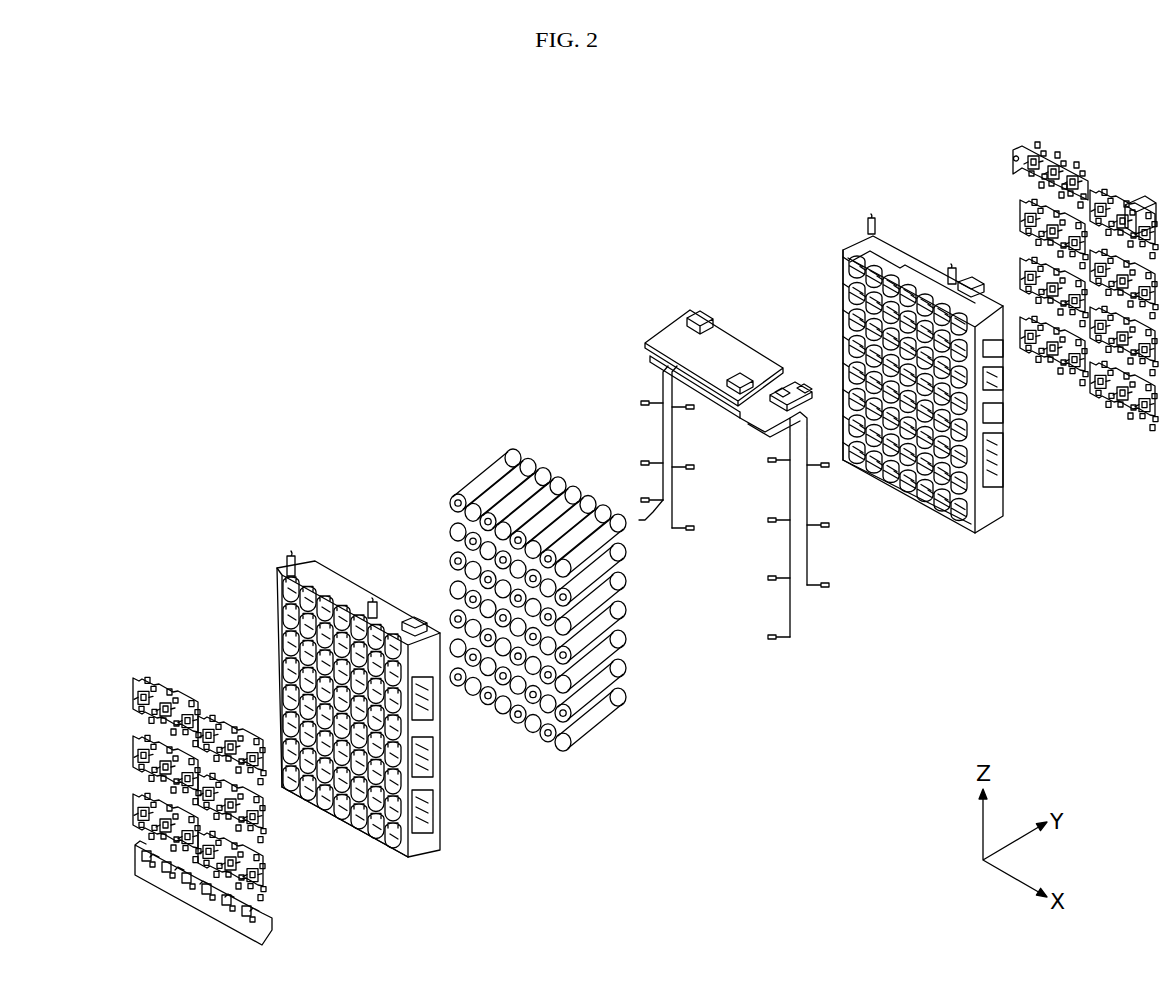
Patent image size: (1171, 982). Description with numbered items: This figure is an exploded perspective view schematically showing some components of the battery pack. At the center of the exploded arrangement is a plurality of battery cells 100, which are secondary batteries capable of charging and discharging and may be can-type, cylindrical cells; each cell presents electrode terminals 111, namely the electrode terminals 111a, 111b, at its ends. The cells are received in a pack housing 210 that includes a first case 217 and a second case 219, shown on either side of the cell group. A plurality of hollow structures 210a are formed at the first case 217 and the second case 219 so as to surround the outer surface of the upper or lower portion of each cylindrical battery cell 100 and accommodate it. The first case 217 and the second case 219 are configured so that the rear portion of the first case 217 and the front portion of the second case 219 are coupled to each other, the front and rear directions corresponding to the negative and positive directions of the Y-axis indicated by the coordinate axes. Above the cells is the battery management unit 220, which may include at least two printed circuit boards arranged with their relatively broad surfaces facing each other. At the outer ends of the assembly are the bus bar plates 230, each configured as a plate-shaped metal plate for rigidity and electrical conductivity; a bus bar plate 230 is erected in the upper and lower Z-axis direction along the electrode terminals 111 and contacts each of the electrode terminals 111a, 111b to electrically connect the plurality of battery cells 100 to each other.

The battery cell 100 is at (550, 647).
The electrode terminals 111 is at (708, 862).
The electrode terminal 111a is at (522, 676).
The electrode terminal 111b is at (522, 461).
The pack housing 210 is at (837, 862).
The hollow structure 210a is at (891, 384).
The first case 217 is at (509, 691).
The second case 219 is at (891, 529).
The battery management unit 220 is at (731, 455).
The bus bar plate 230 is at (635, 542).